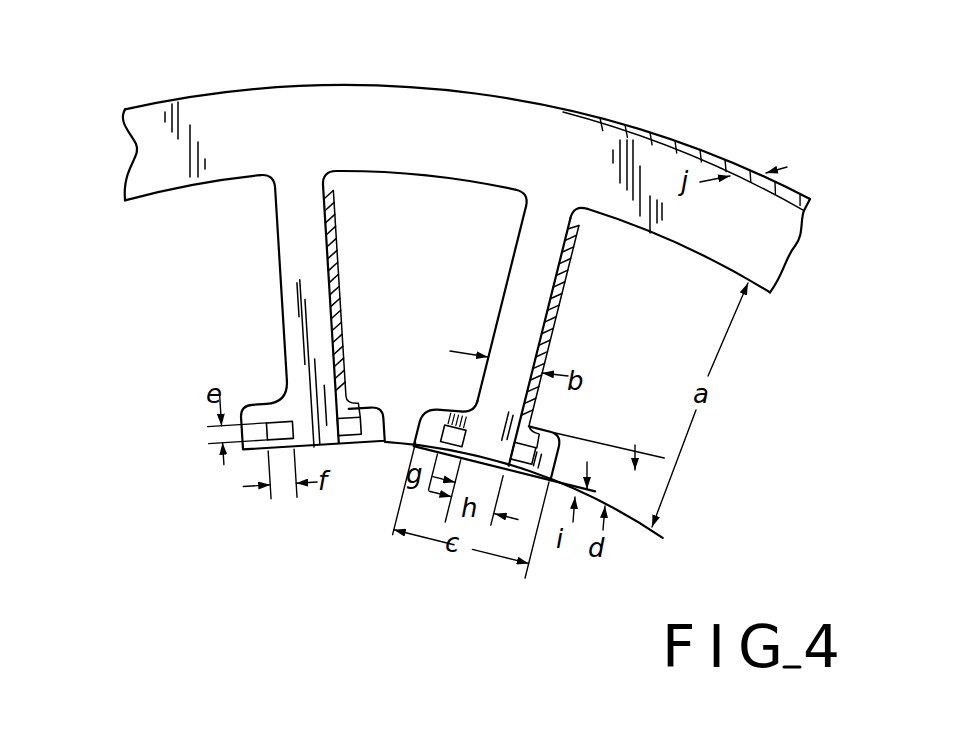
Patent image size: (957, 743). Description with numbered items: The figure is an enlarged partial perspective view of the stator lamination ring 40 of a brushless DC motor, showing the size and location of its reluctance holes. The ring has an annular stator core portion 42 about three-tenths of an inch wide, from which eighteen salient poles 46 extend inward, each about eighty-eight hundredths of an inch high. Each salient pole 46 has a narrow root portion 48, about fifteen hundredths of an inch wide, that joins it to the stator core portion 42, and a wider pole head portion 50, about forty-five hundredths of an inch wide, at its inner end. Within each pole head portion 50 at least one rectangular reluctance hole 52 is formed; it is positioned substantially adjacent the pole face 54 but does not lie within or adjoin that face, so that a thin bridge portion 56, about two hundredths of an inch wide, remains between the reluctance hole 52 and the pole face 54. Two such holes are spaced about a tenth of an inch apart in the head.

The stator lamination ring 40 is at (118, 346).
The stator core portion 42 is at (396, 118).
The salient pole 46 is at (312, 258).
The root portion 48 is at (502, 303).
The pole head portion 50 is at (418, 412).
The reluctance hole 52 is at (345, 401).
The pole face 54 is at (364, 446).
The bridge portion 56 is at (289, 442).